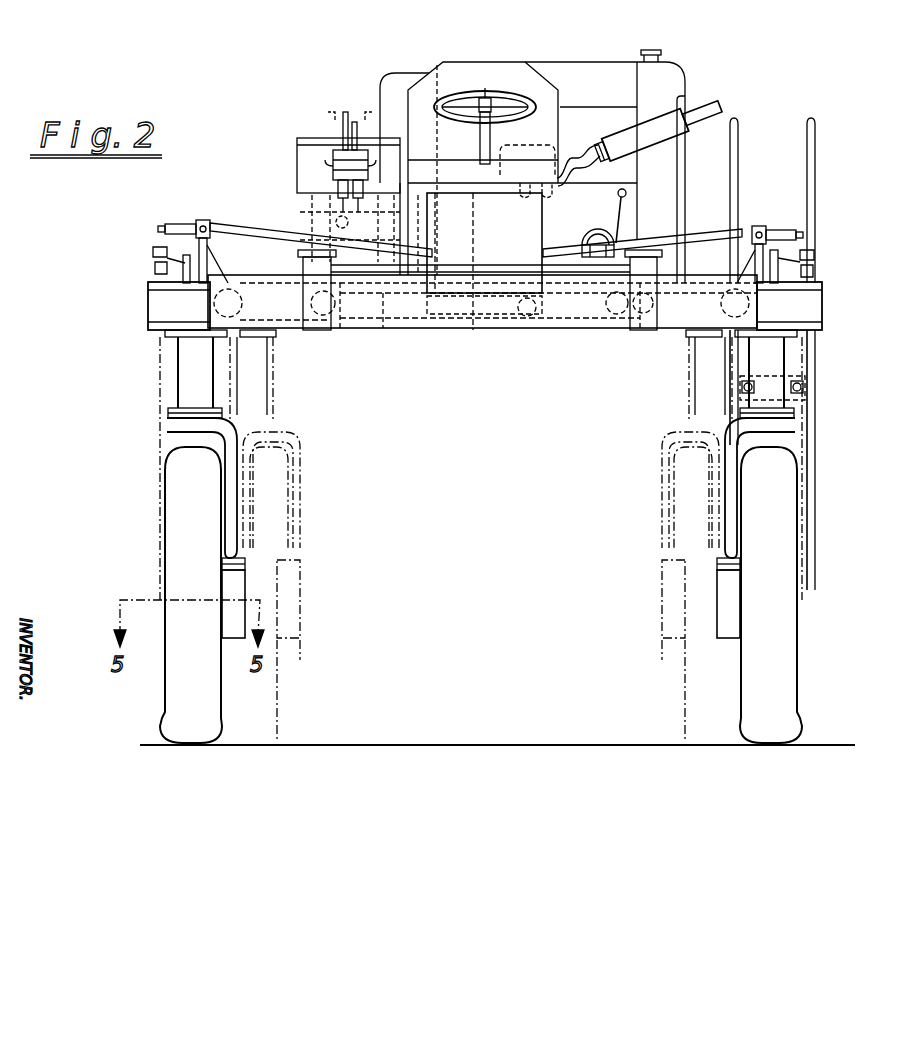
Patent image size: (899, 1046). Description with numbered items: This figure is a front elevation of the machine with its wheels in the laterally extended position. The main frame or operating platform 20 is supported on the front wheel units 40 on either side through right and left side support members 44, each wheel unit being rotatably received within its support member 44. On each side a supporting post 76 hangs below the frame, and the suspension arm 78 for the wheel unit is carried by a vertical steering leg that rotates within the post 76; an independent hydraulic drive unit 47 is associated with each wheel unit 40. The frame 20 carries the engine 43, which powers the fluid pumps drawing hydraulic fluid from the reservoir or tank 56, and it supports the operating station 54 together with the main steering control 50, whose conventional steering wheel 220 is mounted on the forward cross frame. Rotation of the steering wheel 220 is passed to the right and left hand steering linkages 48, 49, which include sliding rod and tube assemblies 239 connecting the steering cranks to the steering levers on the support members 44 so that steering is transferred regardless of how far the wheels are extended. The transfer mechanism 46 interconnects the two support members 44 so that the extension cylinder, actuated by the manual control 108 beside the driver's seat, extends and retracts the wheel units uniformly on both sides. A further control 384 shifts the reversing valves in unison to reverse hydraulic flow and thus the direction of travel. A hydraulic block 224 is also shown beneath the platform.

The main frame 20 is at (580, 328).
The front wheel unit 40 is at (162, 503).
The engine 43 is at (689, 67).
The side support member 44 is at (141, 293).
The transfer mechanism 46 is at (386, 335).
The drive unit 47 is at (254, 585).
The right hand steering linkage 48 is at (194, 216).
The left hand steering linkage 49 is at (769, 208).
The main steering control 50 is at (511, 85).
The operating station 54 is at (388, 91).
The reservoir or tank 56 is at (298, 170).
The supporting post 76 is at (232, 381).
The suspension arm 78 is at (230, 428).
The manual control 108 is at (600, 192).
The steering wheel 220 is at (464, 90).
The hydraulic block 224 is at (473, 330).
The sliding rod and tube assembly 239 is at (250, 232).
The control 384 is at (590, 220).